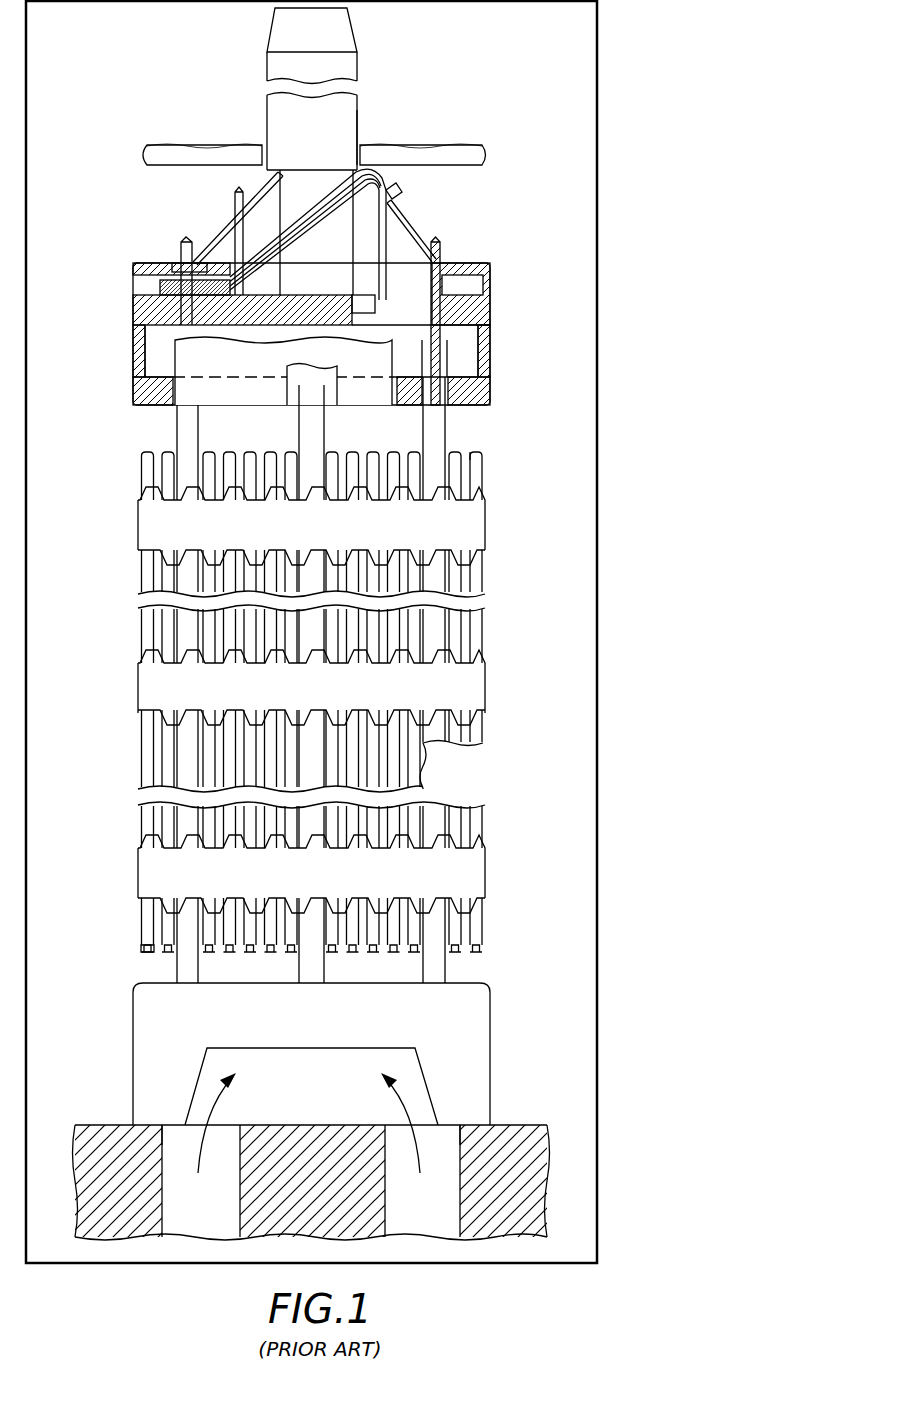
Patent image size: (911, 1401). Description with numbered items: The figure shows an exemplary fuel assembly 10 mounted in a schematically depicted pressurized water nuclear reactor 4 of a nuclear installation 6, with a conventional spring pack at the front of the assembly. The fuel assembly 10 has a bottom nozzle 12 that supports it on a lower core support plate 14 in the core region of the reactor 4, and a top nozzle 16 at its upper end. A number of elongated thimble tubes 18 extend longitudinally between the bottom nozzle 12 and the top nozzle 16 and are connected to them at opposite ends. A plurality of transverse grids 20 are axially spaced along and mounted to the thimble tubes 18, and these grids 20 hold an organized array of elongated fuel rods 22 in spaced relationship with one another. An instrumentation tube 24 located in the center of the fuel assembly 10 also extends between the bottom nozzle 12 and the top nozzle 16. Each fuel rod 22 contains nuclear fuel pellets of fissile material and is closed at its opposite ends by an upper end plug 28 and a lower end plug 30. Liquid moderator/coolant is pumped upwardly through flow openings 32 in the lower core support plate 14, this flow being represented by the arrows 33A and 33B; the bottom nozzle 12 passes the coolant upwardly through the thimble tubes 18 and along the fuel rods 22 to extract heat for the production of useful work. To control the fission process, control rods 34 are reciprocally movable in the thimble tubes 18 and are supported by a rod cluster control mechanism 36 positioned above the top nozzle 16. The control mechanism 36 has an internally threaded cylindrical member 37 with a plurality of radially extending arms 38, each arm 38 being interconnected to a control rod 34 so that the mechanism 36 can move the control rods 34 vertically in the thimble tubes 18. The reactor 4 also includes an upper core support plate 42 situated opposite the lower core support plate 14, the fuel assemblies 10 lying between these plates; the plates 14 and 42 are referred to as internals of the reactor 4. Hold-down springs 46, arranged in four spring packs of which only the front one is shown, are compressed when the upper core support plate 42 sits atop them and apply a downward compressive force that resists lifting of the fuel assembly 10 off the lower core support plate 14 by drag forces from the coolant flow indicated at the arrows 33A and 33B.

The nuclear reactor 4 is at (615, 602).
The nuclear installation 6 is at (646, 502).
The fuel assembly 10 is at (326, 519).
The bottom nozzle 12 is at (492, 1008).
The lower core support plate 14 is at (529, 1124).
The top nozzle 16 is at (492, 285).
The thimble tubes 18 is at (448, 410).
The grids 20 is at (303, 538).
The fuel rods 22 is at (147, 772).
The instrumentation tube 24 is at (298, 440).
The upper end plug 28 is at (455, 444).
The lower end plug 30 is at (167, 954).
The flow openings 32 is at (178, 1143).
The arrows 33A is at (198, 1143).
The arrows 33B is at (422, 1149).
The control rods 34 is at (440, 372).
The rod cluster control mechanism 36 is at (371, 97).
The internally threaded cylindrical member 37 is at (360, 123).
The radially extending arms 38 is at (221, 231).
The upper core support plate 42 is at (458, 145).
The hold-down springs 46 is at (412, 187).